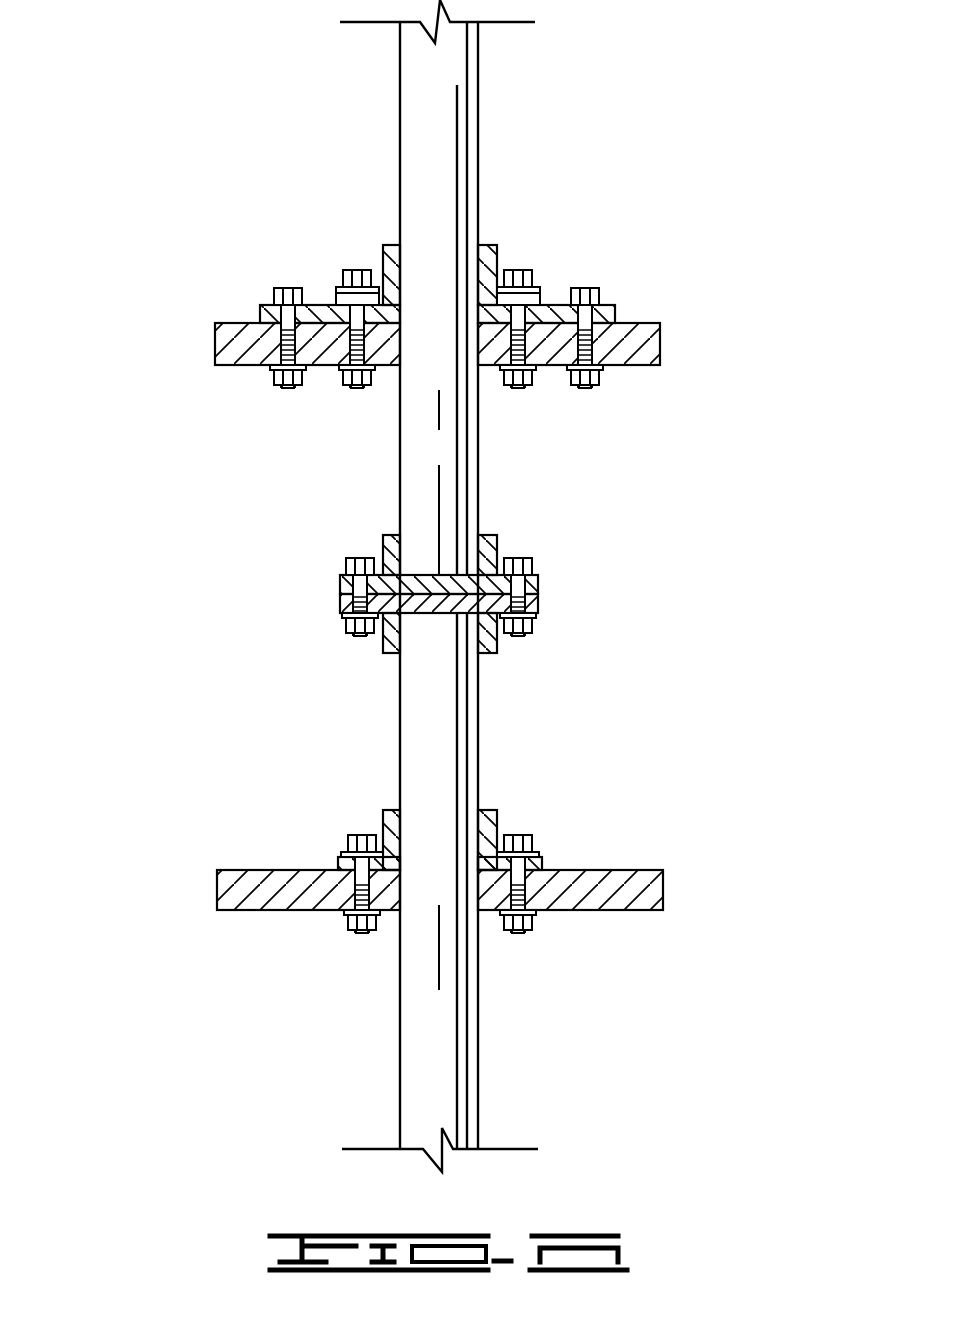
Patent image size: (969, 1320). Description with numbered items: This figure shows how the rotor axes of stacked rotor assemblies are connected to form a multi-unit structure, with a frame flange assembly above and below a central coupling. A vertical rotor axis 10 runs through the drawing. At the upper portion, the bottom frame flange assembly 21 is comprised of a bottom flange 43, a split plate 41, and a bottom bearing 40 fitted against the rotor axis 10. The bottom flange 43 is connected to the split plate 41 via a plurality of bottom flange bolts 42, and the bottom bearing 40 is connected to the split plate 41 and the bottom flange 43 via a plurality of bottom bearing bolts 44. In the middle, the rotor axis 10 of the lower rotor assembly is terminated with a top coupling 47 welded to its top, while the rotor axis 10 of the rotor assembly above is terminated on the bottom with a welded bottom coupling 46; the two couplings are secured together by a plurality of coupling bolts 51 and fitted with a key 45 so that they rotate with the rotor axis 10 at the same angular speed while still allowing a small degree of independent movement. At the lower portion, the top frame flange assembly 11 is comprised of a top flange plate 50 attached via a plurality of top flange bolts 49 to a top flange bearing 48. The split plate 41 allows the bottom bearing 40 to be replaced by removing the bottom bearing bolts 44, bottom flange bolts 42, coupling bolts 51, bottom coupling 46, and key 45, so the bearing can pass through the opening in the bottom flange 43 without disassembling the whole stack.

The rotor axis 10 is at (478, 85).
The bottom frame flange assembly 21 is at (180, 222).
The top frame flange assembly 11 is at (222, 812).
The bottom bearing 40 is at (495, 245).
The split plate 41 is at (330, 305).
The bottom flange bolts 42 is at (278, 293).
The bottom flange 43 is at (215, 347).
The bottom bearing bolts 44 is at (357, 268).
The key 45 is at (383, 535).
The bottom coupling 46 is at (488, 533).
The top coupling 47 is at (487, 652).
The top flange bearing 48 is at (383, 812).
The top flange bolts 49 is at (538, 853).
The top flange plate 50 is at (663, 890).
The coupling bolts 51 is at (348, 562).